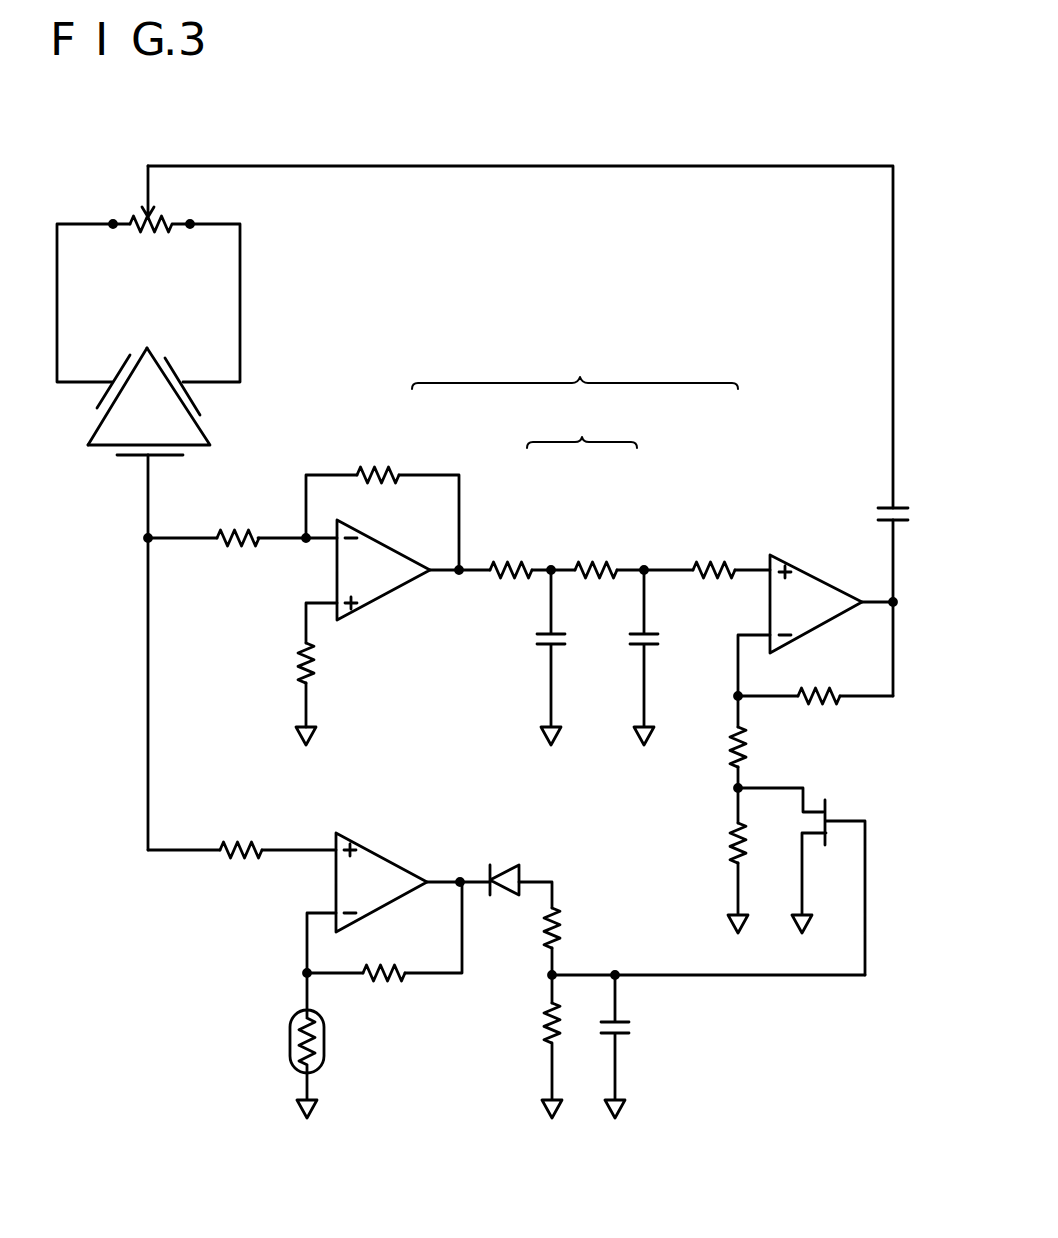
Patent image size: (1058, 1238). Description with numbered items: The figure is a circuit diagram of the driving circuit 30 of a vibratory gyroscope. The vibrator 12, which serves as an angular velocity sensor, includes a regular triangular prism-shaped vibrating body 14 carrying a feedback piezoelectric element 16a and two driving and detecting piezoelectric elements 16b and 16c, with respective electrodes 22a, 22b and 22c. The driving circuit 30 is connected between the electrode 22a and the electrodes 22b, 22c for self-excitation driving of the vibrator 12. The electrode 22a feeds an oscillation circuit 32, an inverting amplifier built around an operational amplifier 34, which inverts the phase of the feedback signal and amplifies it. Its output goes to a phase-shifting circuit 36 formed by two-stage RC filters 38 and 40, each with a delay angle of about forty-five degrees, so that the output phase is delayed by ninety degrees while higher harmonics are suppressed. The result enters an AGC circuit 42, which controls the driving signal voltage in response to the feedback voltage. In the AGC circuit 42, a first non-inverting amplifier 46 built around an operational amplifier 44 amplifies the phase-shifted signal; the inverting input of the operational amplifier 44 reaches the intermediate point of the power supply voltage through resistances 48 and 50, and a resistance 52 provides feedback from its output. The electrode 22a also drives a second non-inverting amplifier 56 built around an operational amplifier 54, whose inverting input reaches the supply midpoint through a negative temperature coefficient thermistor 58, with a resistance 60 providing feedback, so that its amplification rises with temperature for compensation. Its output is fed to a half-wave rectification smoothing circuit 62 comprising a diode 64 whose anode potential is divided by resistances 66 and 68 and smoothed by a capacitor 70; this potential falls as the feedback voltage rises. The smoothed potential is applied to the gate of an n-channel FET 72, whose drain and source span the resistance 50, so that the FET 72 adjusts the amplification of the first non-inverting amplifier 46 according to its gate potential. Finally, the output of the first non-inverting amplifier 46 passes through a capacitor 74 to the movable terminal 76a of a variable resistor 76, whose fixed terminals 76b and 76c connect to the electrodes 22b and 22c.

The vibrator 12 is at (222, 430).
The vibrating body 14 is at (115, 422).
The feedback piezoelectric element 16a is at (116, 472).
The driving and detecting piezoelectric element 16b is at (212, 398).
The driving and detecting piezoelectric element 16c is at (112, 358).
The electrode 22a is at (137, 462).
The electrode 22b is at (200, 408).
The electrode 22c is at (123, 363).
The driving circuit 30 is at (575, 366).
The oscillation circuit 32 is at (418, 460).
The operational amplifier 34 is at (383, 587).
The phase-shifting circuit 36 is at (582, 420).
The RC filter 38 is at (535, 548).
The RC filter 40 is at (631, 548).
The AGC circuit 42 is at (735, 497).
The operational amplifier 44 is at (808, 578).
The first non-inverting amplifier 46 is at (793, 535).
The resistance 48 is at (732, 738).
The resistance 50 is at (732, 835).
The resistance 52 is at (827, 703).
The operational amplifier 54 is at (372, 858).
The second non-inverting amplifier 56 is at (262, 922).
The negative temperature coefficient thermistor 58 is at (290, 1027).
The resistance 60 is at (377, 980).
The half-wave rectification smoothing circuit 62 is at (587, 858).
The diode 64 is at (504, 865).
The resistance 66 is at (545, 937).
The resistance 68 is at (545, 1022).
The capacitor 70 is at (623, 1037).
The n-channel FET 72 is at (828, 805).
The capacitor 74 is at (883, 507).
The variable resistor 76 is at (168, 242).
The movable terminal 76a is at (152, 212).
The fixed terminal 76b is at (191, 224).
The fixed terminal 76c is at (113, 221).